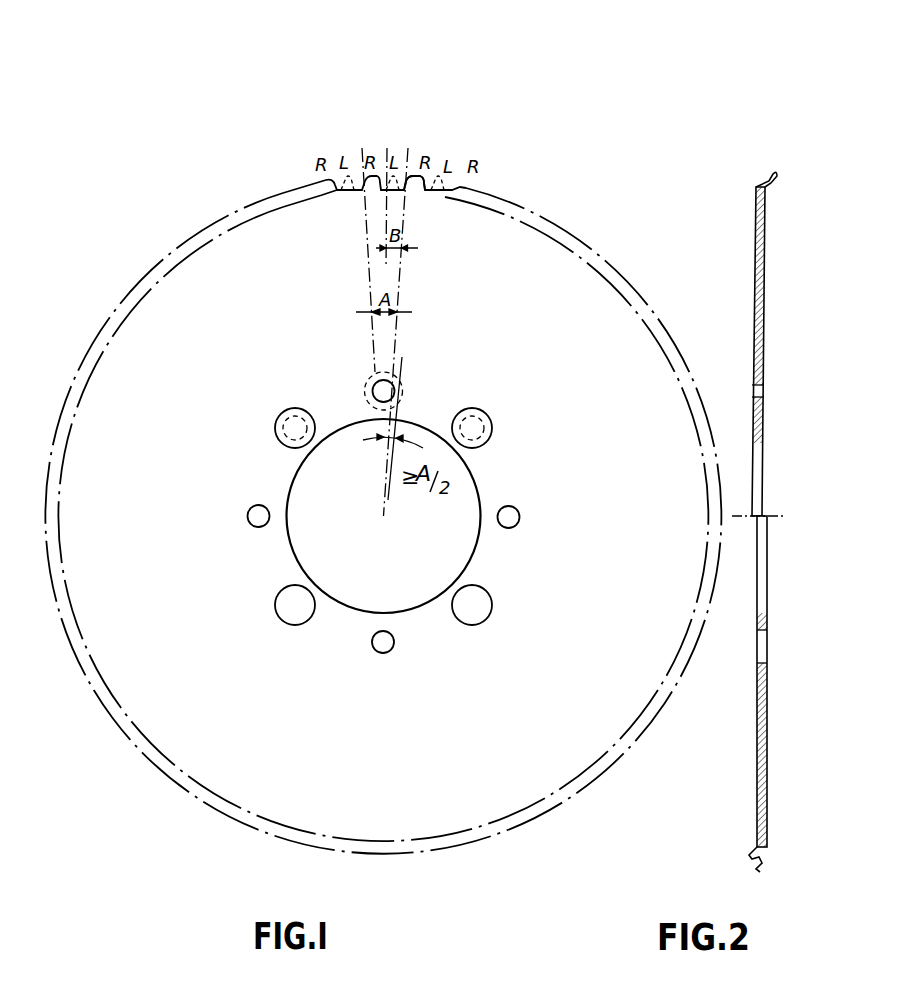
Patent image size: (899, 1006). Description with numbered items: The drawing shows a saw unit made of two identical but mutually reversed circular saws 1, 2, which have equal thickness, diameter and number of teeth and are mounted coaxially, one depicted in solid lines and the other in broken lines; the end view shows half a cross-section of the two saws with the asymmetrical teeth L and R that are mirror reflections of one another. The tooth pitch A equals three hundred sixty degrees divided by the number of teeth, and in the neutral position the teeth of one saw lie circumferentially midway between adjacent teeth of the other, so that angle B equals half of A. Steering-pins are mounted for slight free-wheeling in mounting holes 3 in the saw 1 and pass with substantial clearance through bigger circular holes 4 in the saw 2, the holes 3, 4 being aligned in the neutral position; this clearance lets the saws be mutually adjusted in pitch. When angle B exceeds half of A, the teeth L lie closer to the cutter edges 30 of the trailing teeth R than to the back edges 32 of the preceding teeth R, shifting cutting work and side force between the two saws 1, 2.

In FIG. 1, the circular saw 1 is at (252, 248).
In FIG. 2, the circular saw 1 is at (756, 262).
In FIG. 2, the circular saw 2 is at (757, 779).
In FIG. 1, the mounting holes 3 is at (519, 512).
In FIG. 2, the mounting holes 3 is at (755, 393).
In FIG. 1, the circular holes 4 is at (399, 375).
In FIG. 2, the circular holes 4 is at (758, 656).
In FIG. 1, the cutter edges 30 is at (392, 172).
In FIG. 1, the back edges 32 is at (415, 172).